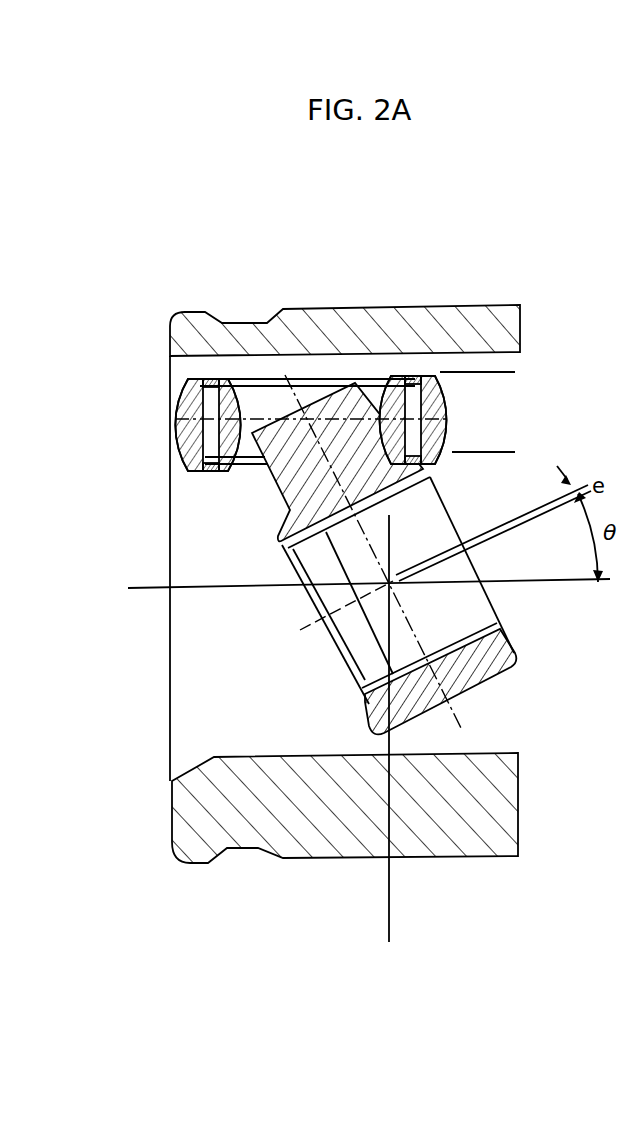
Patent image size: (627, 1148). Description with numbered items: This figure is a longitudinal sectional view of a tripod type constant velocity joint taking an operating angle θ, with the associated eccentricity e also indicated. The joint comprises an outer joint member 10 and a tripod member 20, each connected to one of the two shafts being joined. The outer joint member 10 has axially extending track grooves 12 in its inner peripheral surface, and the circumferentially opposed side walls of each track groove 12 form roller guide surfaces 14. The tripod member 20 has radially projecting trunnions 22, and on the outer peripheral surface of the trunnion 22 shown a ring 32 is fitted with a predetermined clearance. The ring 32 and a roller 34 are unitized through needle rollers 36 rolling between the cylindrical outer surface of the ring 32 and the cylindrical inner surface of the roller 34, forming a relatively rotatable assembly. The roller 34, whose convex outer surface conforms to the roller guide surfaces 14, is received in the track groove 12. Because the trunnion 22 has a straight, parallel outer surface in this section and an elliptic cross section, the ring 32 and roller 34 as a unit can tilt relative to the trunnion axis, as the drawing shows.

The outer joint member 10 is at (303, 308).
The track groove 12 is at (166, 364).
The roller guide surface 14 is at (470, 427).
The tripod member 20 is at (494, 672).
The trunnion 22 is at (286, 470).
The ring 32 is at (247, 379).
The roller 34 is at (176, 437).
The needle roller 36 is at (402, 376).